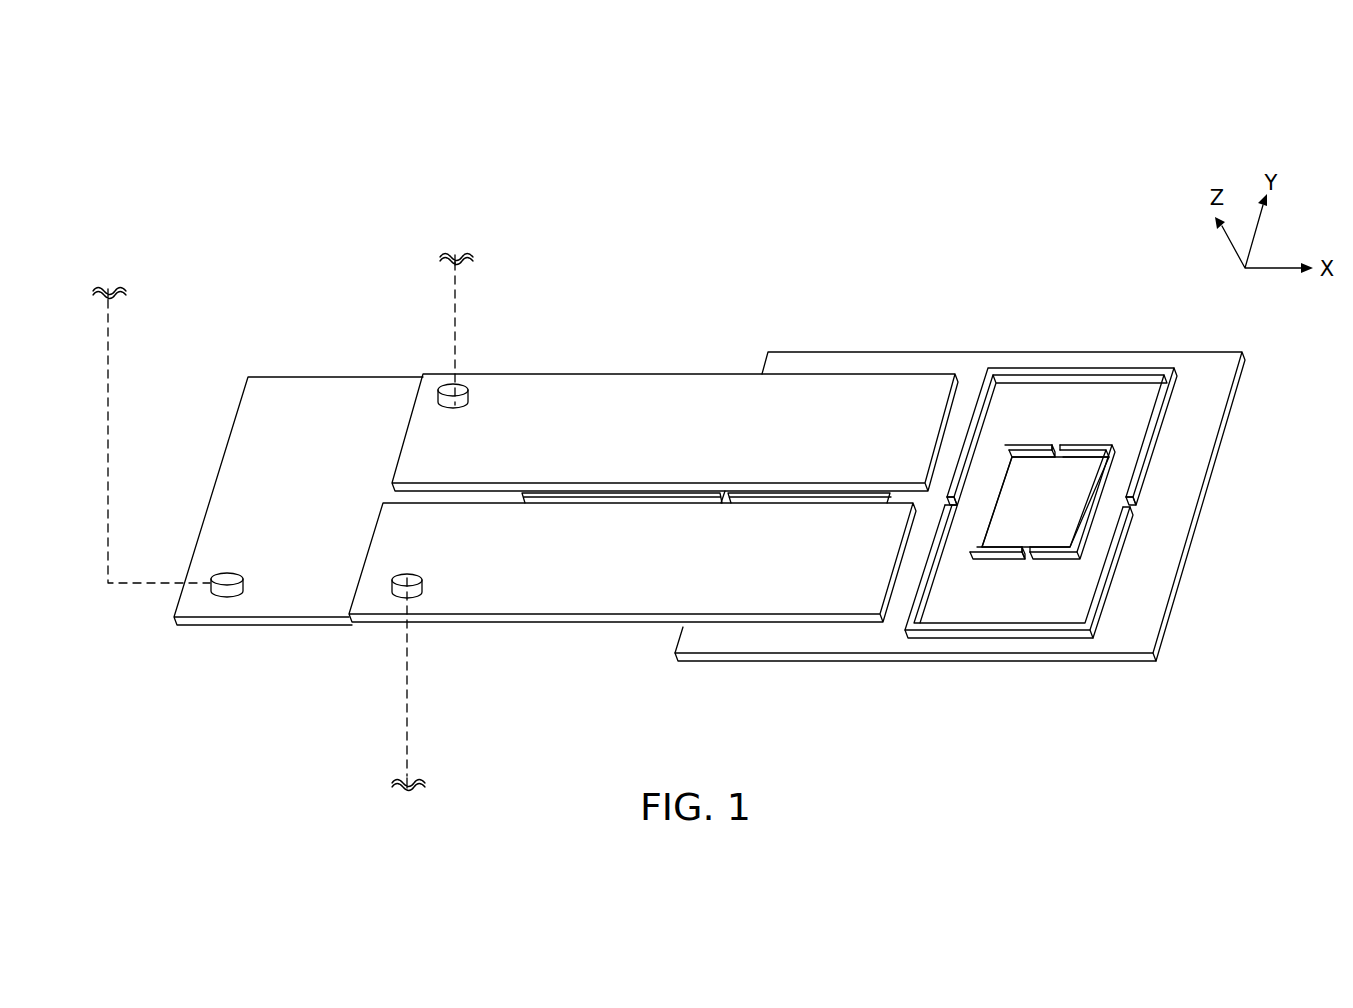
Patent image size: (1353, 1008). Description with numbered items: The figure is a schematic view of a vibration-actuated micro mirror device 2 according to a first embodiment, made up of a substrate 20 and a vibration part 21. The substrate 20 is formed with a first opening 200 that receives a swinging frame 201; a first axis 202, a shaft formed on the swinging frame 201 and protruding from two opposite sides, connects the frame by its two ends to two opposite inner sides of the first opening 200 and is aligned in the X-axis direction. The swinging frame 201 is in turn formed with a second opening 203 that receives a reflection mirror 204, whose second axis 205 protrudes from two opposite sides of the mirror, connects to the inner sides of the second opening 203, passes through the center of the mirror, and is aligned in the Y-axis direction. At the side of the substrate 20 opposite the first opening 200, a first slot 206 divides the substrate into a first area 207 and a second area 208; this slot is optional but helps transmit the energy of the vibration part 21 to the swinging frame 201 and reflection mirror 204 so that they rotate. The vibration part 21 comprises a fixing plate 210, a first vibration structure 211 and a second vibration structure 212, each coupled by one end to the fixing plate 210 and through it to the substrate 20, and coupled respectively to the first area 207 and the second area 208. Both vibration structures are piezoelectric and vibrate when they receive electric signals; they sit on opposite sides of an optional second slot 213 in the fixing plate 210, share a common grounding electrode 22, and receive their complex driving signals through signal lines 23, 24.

The vibration-actuated micro mirror device 2 is at (242, 170).
The substrate 20 is at (792, 344).
The vibration part 21 is at (320, 371).
The grounding electrode 22 is at (232, 578).
The signal line 23 is at (460, 296).
The signal line 24 is at (412, 696).
The first opening 200 is at (1092, 373).
The swinging frame 201 is at (1137, 400).
The first axis 202 is at (955, 497).
The second opening 203 is at (1022, 458).
The reflection mirror 204 is at (1073, 503).
The second axis 205 is at (1057, 453).
The first slot 206 is at (810, 503).
The first area 207 is at (862, 370).
The second area 208 is at (803, 640).
The fixing plate 210 is at (262, 433).
The first vibration structure 211 is at (580, 383).
The second vibration structure 212 is at (527, 598).
The second slot 213 is at (575, 497).